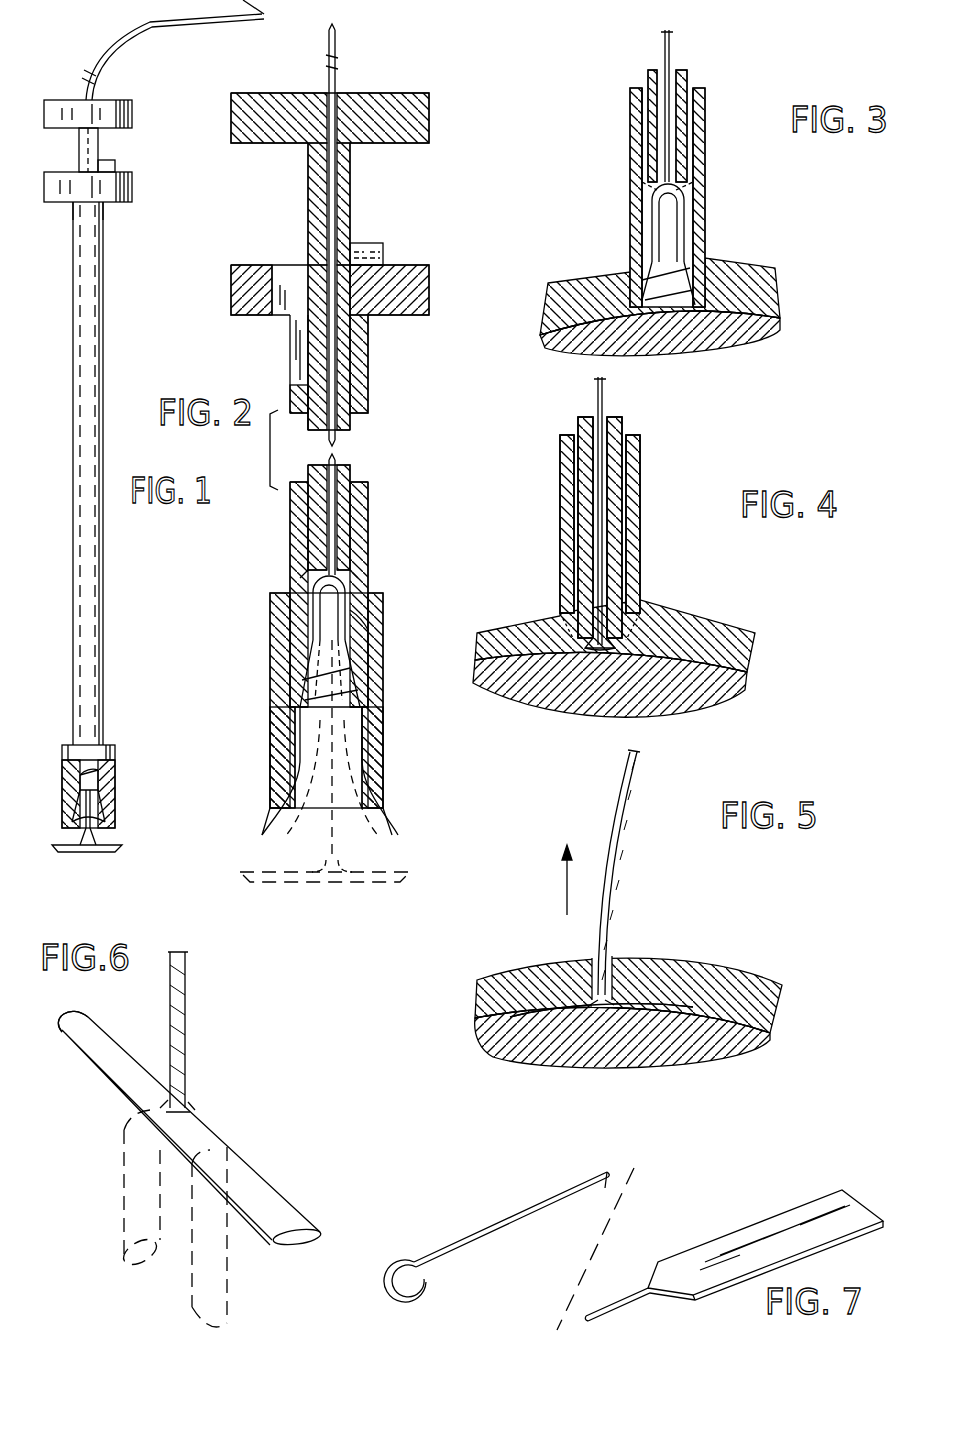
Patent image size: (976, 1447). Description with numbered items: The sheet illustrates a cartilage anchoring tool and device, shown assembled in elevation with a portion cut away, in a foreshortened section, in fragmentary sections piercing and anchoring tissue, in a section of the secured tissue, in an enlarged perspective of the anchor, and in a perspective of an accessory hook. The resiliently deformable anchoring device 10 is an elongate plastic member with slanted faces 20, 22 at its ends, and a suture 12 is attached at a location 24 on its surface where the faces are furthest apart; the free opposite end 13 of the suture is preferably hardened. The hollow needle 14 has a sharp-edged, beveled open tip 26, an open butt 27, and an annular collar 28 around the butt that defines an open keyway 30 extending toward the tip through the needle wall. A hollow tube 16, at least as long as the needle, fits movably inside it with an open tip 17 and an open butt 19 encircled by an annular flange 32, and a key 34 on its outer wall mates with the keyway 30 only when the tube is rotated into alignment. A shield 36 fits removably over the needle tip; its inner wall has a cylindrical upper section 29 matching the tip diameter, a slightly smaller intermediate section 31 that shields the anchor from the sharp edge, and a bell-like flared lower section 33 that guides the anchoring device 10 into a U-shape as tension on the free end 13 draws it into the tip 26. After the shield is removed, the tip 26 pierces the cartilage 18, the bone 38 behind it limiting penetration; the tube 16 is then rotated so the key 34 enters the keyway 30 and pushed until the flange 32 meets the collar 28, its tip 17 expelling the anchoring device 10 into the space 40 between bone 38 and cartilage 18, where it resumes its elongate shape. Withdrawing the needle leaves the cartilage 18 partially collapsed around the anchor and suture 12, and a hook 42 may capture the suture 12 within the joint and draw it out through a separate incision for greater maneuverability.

In FIG. 1, the anchoring device 10 is at (104, 852).
In FIG. 2, the anchoring device 10 is at (346, 592).
In FIG. 3, the anchoring device 10 is at (686, 212).
In FIG. 4, the anchoring device 10 is at (660, 655).
In FIG. 5, the anchoring device 10 is at (670, 1005).
In FIG. 6, the anchoring device 10 is at (262, 1160).
In FIG. 1, the suture 12 is at (88, 97).
In FIG. 2, the suture 12 is at (338, 458).
In FIG. 3, the suture 12 is at (671, 52).
In FIG. 4, the suture 12 is at (604, 406).
In FIG. 5, the suture 12 is at (608, 908).
In FIG. 6, the suture 12 is at (186, 1050).
In FIG. 2, the free end of suture 13 is at (336, 46).
In FIG. 1, the hollow needle 14 is at (103, 659).
In FIG. 2, the hollow needle 14 is at (369, 494).
In FIG. 3, the hollow needle 14 is at (706, 118).
In FIG. 4, the hollow needle 14 is at (640, 486).
In FIG. 2, the hollow tube 16 is at (352, 478).
In FIG. 3, the hollow tube 16 is at (688, 80).
In FIG. 4, the hollow tube 16 is at (622, 432).
In FIG. 2, the tip of tube 17 is at (306, 574).
In FIG. 3, the tip of tube 17 is at (645, 186).
In FIG. 3, the cartilage 18 is at (772, 270).
In FIG. 4, the cartilage 18 is at (742, 632).
In FIG. 5, the cartilage 18 is at (757, 985).
In FIG. 1, the butt of tube 19 is at (80, 130).
In FIG. 2, the butt of tube 19 is at (306, 148).
In FIG. 6, the face 20 is at (296, 1245).
In FIG. 6, the face 22 is at (72, 1058).
In FIG. 6, the suture attachment location 24 is at (190, 1118).
In FIG. 1, the needle tip 26 is at (66, 784).
In FIG. 2, the needle tip 26 is at (352, 690).
In FIG. 3, the needle tip 26 is at (700, 292).
In FIG. 4, the needle tip 26 is at (640, 636).
In FIG. 1, the needle butt 27 is at (103, 214).
In FIG. 2, the needle butt 27 is at (368, 332).
In FIG. 1, the annular collar 28 is at (120, 202).
In FIG. 2, the annular collar 28 is at (429, 302).
In FIG. 2, the upper section of shield 29 is at (368, 630).
In FIG. 2, the keyway 30 is at (298, 278).
In FIG. 2, the intermediate section of shield 31 is at (362, 745).
In FIG. 1, the annular flange 32 is at (117, 100).
In FIG. 2, the annular flange 32 is at (410, 93).
In FIG. 2, the lower section of shield 33 is at (383, 802).
In FIG. 1, the key 34 is at (112, 164).
In FIG. 2, the key 34 is at (366, 243).
In FIG. 1, the shield 36 is at (115, 784).
In FIG. 2, the shield 36 is at (270, 662).
In FIG. 3, the bone 38 is at (738, 352).
In FIG. 4, the bone 38 is at (716, 714).
In FIG. 5, the bone 38 is at (722, 1070).
In FIG. 3, the space 40 is at (780, 318).
In FIG. 4, the space 40 is at (748, 672).
In FIG. 5, the space 40 is at (772, 1040).
In FIG. 7, the hook 42 is at (520, 1215).